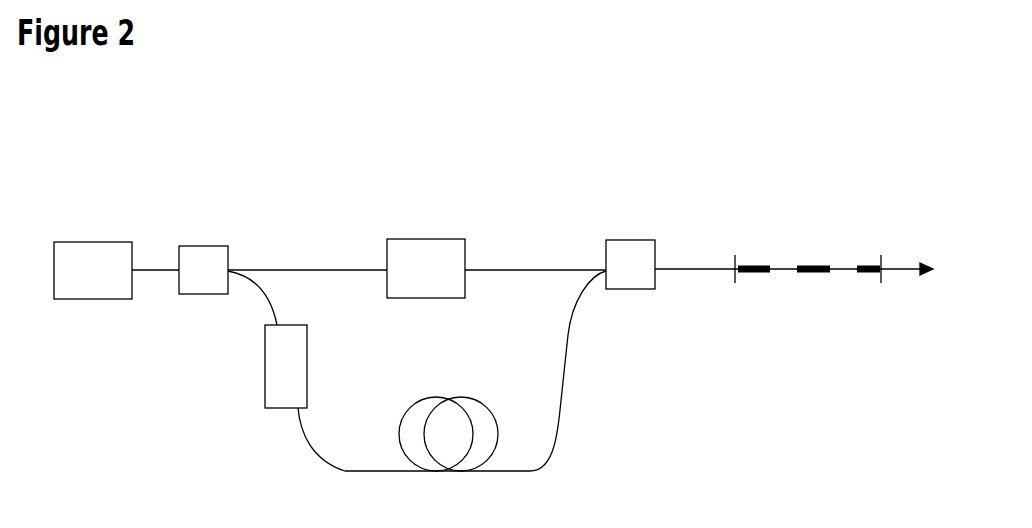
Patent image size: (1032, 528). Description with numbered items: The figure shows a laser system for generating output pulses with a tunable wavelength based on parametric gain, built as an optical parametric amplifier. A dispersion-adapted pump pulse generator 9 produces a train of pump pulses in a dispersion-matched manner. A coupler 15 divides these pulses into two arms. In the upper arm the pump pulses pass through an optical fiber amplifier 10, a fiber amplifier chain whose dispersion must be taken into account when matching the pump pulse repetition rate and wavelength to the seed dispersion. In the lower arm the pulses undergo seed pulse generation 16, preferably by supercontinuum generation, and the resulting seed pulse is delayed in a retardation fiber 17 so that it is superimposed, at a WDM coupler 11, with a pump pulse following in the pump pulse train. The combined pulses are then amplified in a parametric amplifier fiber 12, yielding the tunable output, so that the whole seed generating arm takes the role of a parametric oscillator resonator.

The pump pulse generator 9 is at (103, 237).
The coupler 15 is at (210, 242).
The optical fiber amplifier 10 is at (437, 235).
The WDM coupler 11 is at (640, 238).
The parametric amplifier fiber 12 is at (787, 255).
The seed pulse generation 16 is at (260, 363).
The retardation fiber 17 is at (465, 387).